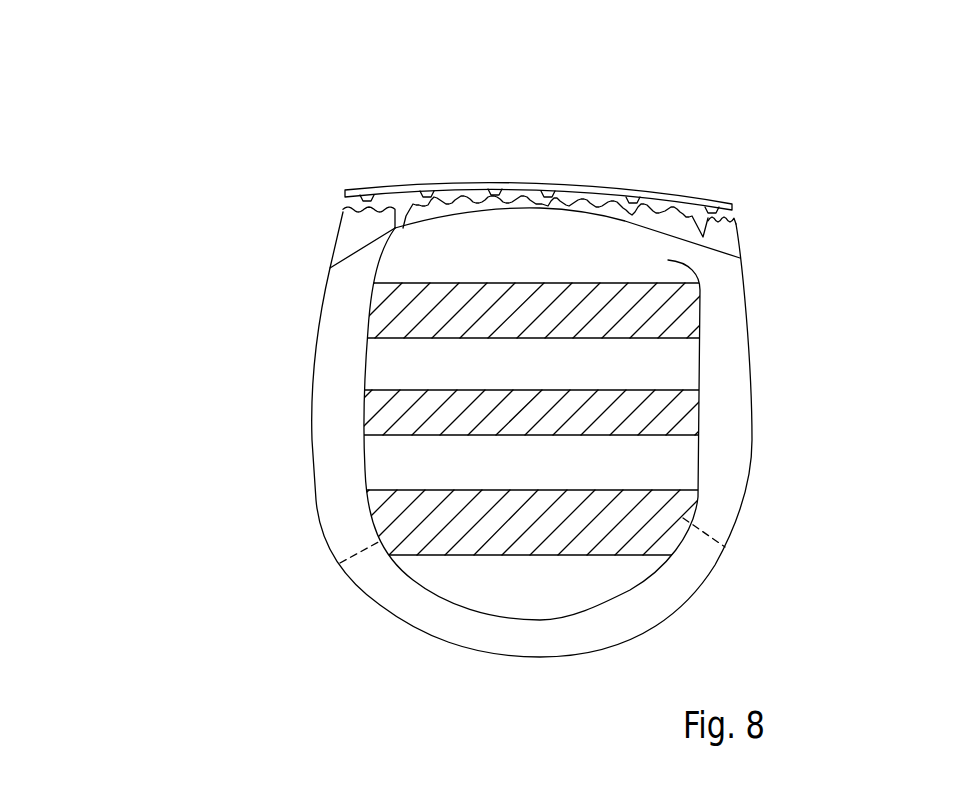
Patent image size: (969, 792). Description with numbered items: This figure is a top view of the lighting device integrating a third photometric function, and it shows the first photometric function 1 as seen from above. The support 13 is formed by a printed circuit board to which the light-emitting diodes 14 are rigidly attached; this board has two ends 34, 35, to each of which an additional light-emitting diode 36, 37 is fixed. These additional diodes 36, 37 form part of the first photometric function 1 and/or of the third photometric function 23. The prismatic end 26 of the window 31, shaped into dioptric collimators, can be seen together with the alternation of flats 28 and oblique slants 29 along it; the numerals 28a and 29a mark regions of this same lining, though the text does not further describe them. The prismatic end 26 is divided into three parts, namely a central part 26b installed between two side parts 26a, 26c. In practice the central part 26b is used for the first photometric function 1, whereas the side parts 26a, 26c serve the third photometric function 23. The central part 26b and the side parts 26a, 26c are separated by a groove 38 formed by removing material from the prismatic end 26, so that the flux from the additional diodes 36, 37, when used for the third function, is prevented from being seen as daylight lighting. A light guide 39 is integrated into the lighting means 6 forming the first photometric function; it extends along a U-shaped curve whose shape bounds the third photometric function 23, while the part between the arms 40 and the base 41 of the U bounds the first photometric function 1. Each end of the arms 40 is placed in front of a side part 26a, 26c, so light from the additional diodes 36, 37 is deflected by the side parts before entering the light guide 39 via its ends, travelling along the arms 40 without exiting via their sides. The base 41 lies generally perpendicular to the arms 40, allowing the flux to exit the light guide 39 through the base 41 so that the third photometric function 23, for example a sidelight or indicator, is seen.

The first photometric function 1 is at (668, 453).
The lighting means 6 is at (201, 486).
The support 13 is at (598, 182).
The light-emitting diodes 14 is at (428, 193).
The third photometric function 23 is at (418, 633).
The prismatic end 26 is at (323, 255).
The side part 26a is at (348, 239).
The central part 26b is at (661, 217).
The side part 26c is at (737, 224).
The flats 28 is at (373, 378).
The lining top wall 28a is at (698, 272).
The oblique slants 29 is at (413, 315).
The lower filter region 29a is at (598, 576).
The window 31 is at (756, 310).
The end of printed circuit board 34 is at (368, 196).
The end of printed circuit board 35 is at (705, 222).
The additional light-emitting diode 36 is at (346, 197).
The additional light-emitting diode 37 is at (736, 207).
The groove 38 is at (402, 227).
The light guide 39 is at (355, 546).
The arms 40 is at (733, 362).
The base 41 is at (611, 620).